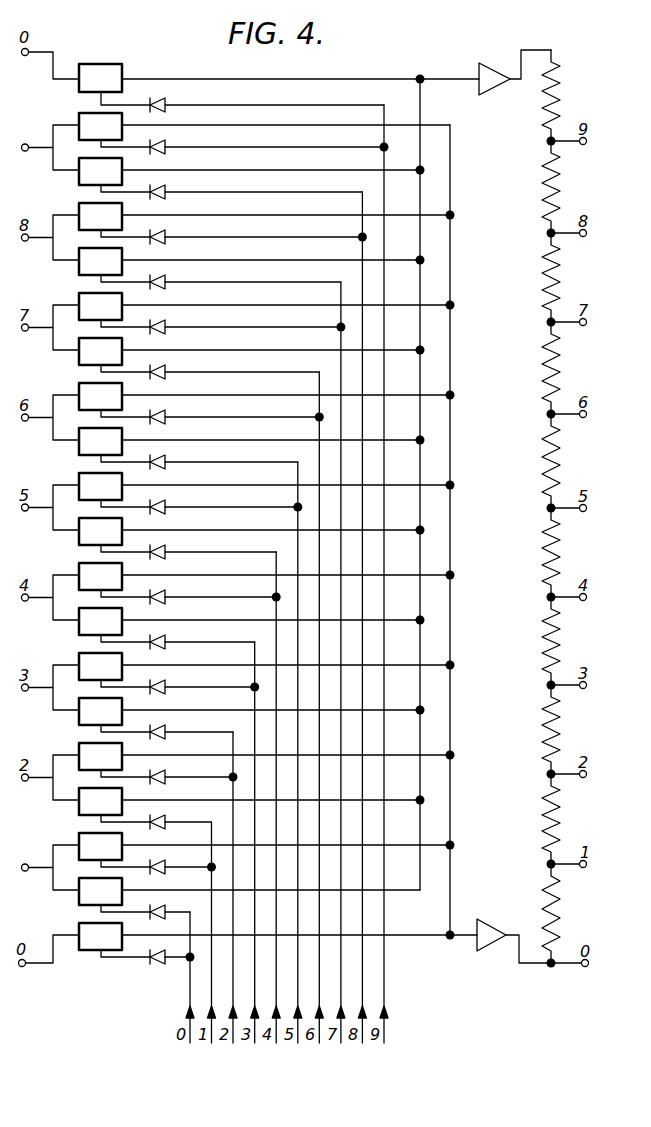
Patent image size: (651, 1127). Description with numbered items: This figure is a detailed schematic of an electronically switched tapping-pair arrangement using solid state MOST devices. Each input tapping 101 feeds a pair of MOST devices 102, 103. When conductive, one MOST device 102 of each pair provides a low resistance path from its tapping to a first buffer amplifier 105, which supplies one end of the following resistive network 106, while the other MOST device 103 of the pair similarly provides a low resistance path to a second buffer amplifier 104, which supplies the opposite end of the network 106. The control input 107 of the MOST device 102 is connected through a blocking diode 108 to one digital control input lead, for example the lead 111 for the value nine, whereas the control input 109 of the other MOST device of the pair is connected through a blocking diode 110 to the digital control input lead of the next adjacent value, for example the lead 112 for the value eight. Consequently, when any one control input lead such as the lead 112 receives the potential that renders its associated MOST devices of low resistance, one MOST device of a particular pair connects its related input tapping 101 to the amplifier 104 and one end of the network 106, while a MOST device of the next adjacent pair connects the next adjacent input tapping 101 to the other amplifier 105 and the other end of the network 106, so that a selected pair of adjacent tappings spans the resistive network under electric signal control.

The input tapping 101 is at (20, 860).
The MOST device 102 is at (79, 113).
The MOST device 103 is at (79, 184).
The second buffer amplifier 104 is at (493, 86).
The first buffer amplifier 105 is at (489, 926).
The resistive network 106 is at (543, 740).
The control input 107 is at (133, 145).
The blocking diode 108 is at (165, 144).
The control input 109 is at (135, 190).
The blocking diode 110 is at (163, 190).
The digital control input lead 111 is at (386, 967).
The digital control input lead 112 is at (364, 995).